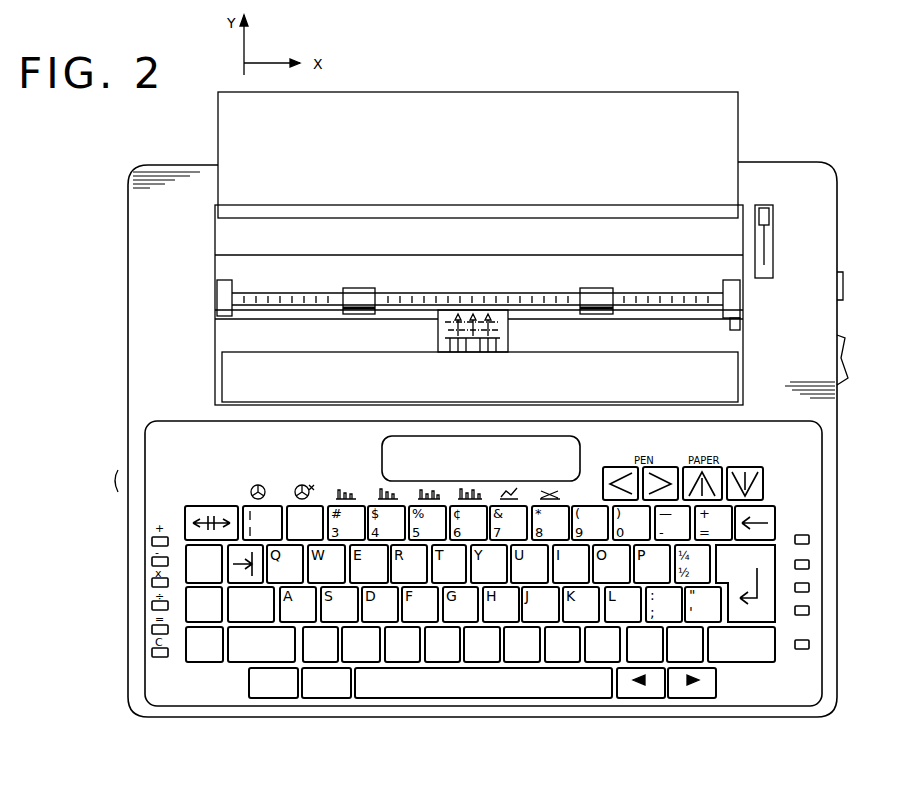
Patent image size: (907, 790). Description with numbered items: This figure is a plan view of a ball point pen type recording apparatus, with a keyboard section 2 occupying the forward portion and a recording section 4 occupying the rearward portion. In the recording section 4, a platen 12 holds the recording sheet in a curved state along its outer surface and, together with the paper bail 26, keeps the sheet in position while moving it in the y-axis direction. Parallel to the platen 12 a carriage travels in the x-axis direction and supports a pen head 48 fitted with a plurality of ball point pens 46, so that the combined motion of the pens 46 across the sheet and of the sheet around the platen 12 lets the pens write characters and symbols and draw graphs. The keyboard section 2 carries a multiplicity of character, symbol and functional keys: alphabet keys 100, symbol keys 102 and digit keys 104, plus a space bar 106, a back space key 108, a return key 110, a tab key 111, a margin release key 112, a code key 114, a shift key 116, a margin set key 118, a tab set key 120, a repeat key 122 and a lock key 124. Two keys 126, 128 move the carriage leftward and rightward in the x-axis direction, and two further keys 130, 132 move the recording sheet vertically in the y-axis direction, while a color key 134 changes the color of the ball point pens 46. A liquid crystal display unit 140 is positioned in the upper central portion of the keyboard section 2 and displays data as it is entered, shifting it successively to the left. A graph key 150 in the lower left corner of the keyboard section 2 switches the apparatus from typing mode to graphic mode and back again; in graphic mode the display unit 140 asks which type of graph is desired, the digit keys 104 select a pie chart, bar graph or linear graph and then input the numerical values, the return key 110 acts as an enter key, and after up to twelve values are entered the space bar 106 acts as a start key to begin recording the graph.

The keyboard section 2 is at (838, 493).
The recording section 4 is at (841, 196).
The platen 12 is at (510, 270).
The paper bail 26 is at (368, 290).
The ball point pens 46 is at (478, 352).
The pen head 48 is at (508, 337).
The alphabet keys 100 is at (405, 663).
The symbol keys 102 is at (696, 660).
The digit keys 104 is at (270, 509).
The space bar 106 is at (510, 692).
The back space key 108 is at (767, 512).
The return key 110 is at (777, 613).
The tab key 111 is at (246, 556).
The margin release key 112 is at (196, 512).
The code key 114 is at (195, 660).
The shift key 116 is at (242, 662).
The margin key 118 is at (186, 553).
The tab set key 120 is at (186, 610).
The repeat key 122 is at (335, 699).
The lock key 124 is at (237, 622).
The carriage leftward key 126 is at (612, 466).
The carriage rightward key 128 is at (654, 466).
The sheet moving key 130 is at (695, 466).
The sheet moving key 132 is at (751, 466).
The color key 134 is at (809, 539).
The liquid crystal display unit 140 is at (382, 456).
The graph key 150 is at (283, 699).